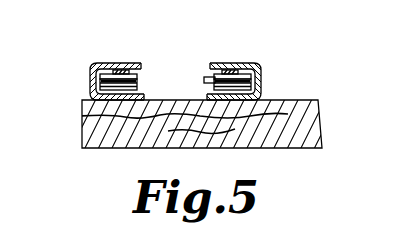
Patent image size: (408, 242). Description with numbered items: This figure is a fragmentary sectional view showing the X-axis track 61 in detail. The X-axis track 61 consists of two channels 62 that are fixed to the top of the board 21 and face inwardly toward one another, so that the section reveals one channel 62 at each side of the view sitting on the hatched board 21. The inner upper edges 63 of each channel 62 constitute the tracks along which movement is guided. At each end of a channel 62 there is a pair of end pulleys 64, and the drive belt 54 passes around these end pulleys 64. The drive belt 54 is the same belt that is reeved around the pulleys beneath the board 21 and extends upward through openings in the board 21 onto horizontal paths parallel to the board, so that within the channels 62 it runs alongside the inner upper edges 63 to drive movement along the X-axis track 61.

The board 21 is at (305, 100).
The X-axis track 61 is at (256, 56).
The channel 62 is at (97, 62).
The inner upper edge 63 is at (143, 67).
The end pulley 64 is at (110, 63).
The drive belt 54 is at (208, 80).